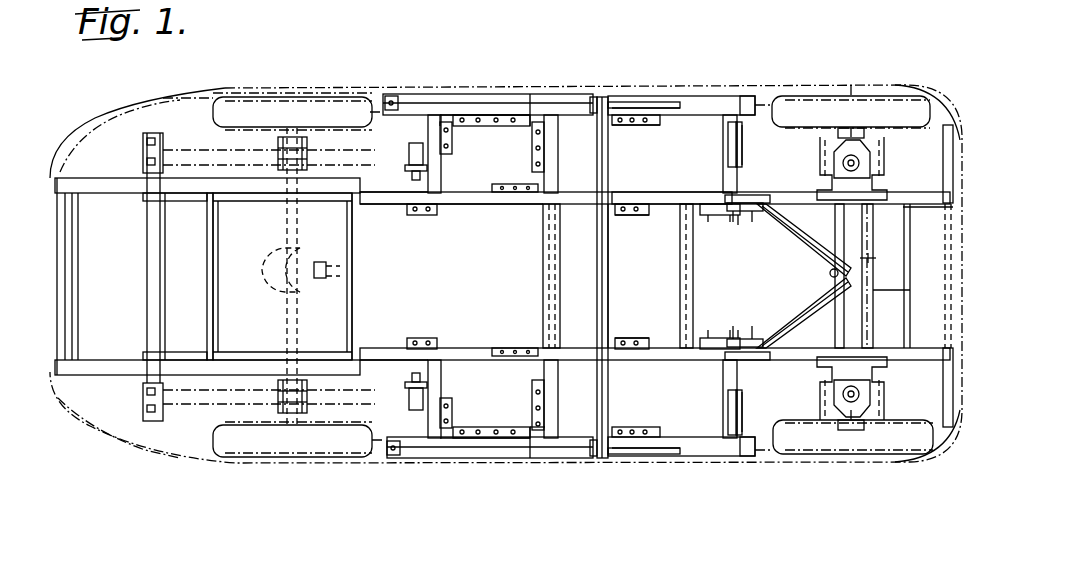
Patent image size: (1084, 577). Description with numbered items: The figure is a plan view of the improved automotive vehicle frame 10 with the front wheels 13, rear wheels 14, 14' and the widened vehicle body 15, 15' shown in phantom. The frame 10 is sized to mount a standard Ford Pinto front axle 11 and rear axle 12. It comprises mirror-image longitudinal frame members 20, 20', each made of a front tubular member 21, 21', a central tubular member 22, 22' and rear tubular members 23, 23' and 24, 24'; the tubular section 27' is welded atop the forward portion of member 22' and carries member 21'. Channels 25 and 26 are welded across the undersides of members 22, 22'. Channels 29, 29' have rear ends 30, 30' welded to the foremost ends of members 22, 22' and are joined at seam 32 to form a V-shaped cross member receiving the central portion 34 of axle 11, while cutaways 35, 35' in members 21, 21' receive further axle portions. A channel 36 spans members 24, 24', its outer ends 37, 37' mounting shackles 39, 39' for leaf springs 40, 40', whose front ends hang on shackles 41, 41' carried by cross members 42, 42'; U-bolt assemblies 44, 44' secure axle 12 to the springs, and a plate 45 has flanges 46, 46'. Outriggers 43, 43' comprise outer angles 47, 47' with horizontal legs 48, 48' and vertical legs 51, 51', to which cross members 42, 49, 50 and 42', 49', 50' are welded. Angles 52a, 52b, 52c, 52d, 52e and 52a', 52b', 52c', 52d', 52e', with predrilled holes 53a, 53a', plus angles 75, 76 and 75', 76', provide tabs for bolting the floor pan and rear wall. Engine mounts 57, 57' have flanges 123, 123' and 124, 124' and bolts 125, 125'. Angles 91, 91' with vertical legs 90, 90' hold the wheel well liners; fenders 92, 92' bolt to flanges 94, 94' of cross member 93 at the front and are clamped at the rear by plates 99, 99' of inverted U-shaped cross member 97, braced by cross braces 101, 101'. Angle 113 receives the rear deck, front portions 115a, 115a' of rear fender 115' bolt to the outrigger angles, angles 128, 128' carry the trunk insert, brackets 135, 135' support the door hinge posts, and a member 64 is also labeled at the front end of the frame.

The vehicle frame 10 is at (594, 90).
The front axle 11 is at (866, 302).
The rear axle 12 is at (280, 232).
The front wheels 13 is at (910, 66).
The rear wheel 14 is at (277, 460).
The rear wheel 14' is at (285, 87).
The vehicle body 15 is at (853, 432).
The vehicle body 15' is at (841, 69).
The longitudinal frame member 20 is at (393, 330).
The longitudinal frame member 20' is at (392, 220).
The front frame member 21 is at (804, 313).
The front frame member 21' is at (804, 240).
The central frame member 22 is at (568, 374).
The central frame member 22' is at (572, 231).
The rear frame member 23 is at (323, 278).
The rear frame member 23' is at (327, 276).
The rear frame member 24 is at (263, 356).
The rear frame member 24' is at (271, 182).
The channel 25 is at (540, 246).
The channel 26 is at (686, 268).
The tubular section 27' is at (672, 276).
The channel 29 is at (804, 314).
The channel 29' is at (805, 239).
The rear end of channel 30 is at (766, 371).
The rear end of channel 30' is at (752, 185).
The seam 32 is at (828, 274).
The central portion of axle 34 is at (882, 247).
The cutaway portion 35 is at (871, 393).
The cutaway portion 35' is at (873, 164).
The channel 36 is at (142, 292).
The outer end of channel 37 is at (119, 437).
The outer end of channel 37' is at (120, 120).
The shackle 39 is at (115, 390).
The shackle 39' is at (168, 146).
The leaf spring 40 is at (170, 320).
The leaf spring 40' is at (186, 239).
The shackle 41 is at (391, 400).
The shackle 41' is at (397, 152).
The cross frame member 42 is at (451, 399).
The cross frame member 42' is at (454, 155).
The outrigger 43 is at (750, 467).
The outrigger 43' is at (738, 84).
The U-bolt assembly 44 is at (269, 367).
The U-bolt assembly 44' is at (269, 168).
The plate 45 is at (252, 284).
The flange 46 is at (190, 276).
The flange 46' is at (188, 276).
The outer angle 47 is at (490, 480).
The outer angle 47' is at (488, 61).
The horizontal leg 48 is at (681, 475).
The horizontal leg 48' is at (681, 74).
The cross frame member 49 is at (559, 398).
The cross frame member 49' is at (521, 150).
The cross frame member 50 is at (708, 399).
The cross frame member 50' is at (708, 154).
The vertical leg 51 is at (712, 443).
The vertical leg 51' is at (703, 144).
The angle 52a is at (494, 340).
The angle 52a' is at (502, 206).
The angle 52b is at (550, 412).
The angle 52b' is at (483, 131).
The angle 52c is at (638, 325).
The angle 52c' is at (641, 235).
The angle 52d is at (485, 470).
The angle 52d' is at (487, 79).
The angle 52e is at (640, 464).
The angle 52e' is at (642, 94).
The holes 53a is at (561, 455).
The holes 53a' is at (553, 97).
The engine mount 57 is at (719, 318).
The engine mount 57' is at (719, 232).
The rear bumper bar 64 is at (945, 100).
The angle 75 is at (417, 324).
The angle 75' is at (425, 227).
The angle 76 is at (461, 411).
The angle 76' is at (464, 146).
The vertical leg 90 is at (755, 407).
The vertical leg 90' is at (757, 146).
The angle 91 is at (758, 412).
The angle 91' is at (758, 144).
The fender 92 is at (869, 473).
The fender 92' is at (918, 71).
The cross member 93 is at (920, 278).
The upstanding flange 94 is at (890, 276).
The upstanding flange 94' is at (907, 276).
The inverted U-shaped cross frame member 97 is at (612, 278).
The horizontal plate 99 is at (649, 482).
The horizontal plate 99' is at (659, 84).
The cross brace 101 is at (638, 479).
The cross brace 101' is at (655, 56).
The angle 113 is at (72, 266).
The rear fender 115' is at (292, 56).
The front portion of rear fender 115a is at (399, 478).
The front portion of rear fender 115a' is at (384, 77).
The flange 123 is at (761, 321).
The flange 123' is at (784, 194).
The rear flange 124 is at (666, 363).
The rear flange 124' is at (647, 219).
The bolts 125 is at (749, 314).
The bolts 125' is at (752, 230).
The angle 128 is at (143, 341).
The angle 128' is at (143, 212).
The bracket 135 is at (550, 464).
The bracket 135' is at (545, 93).